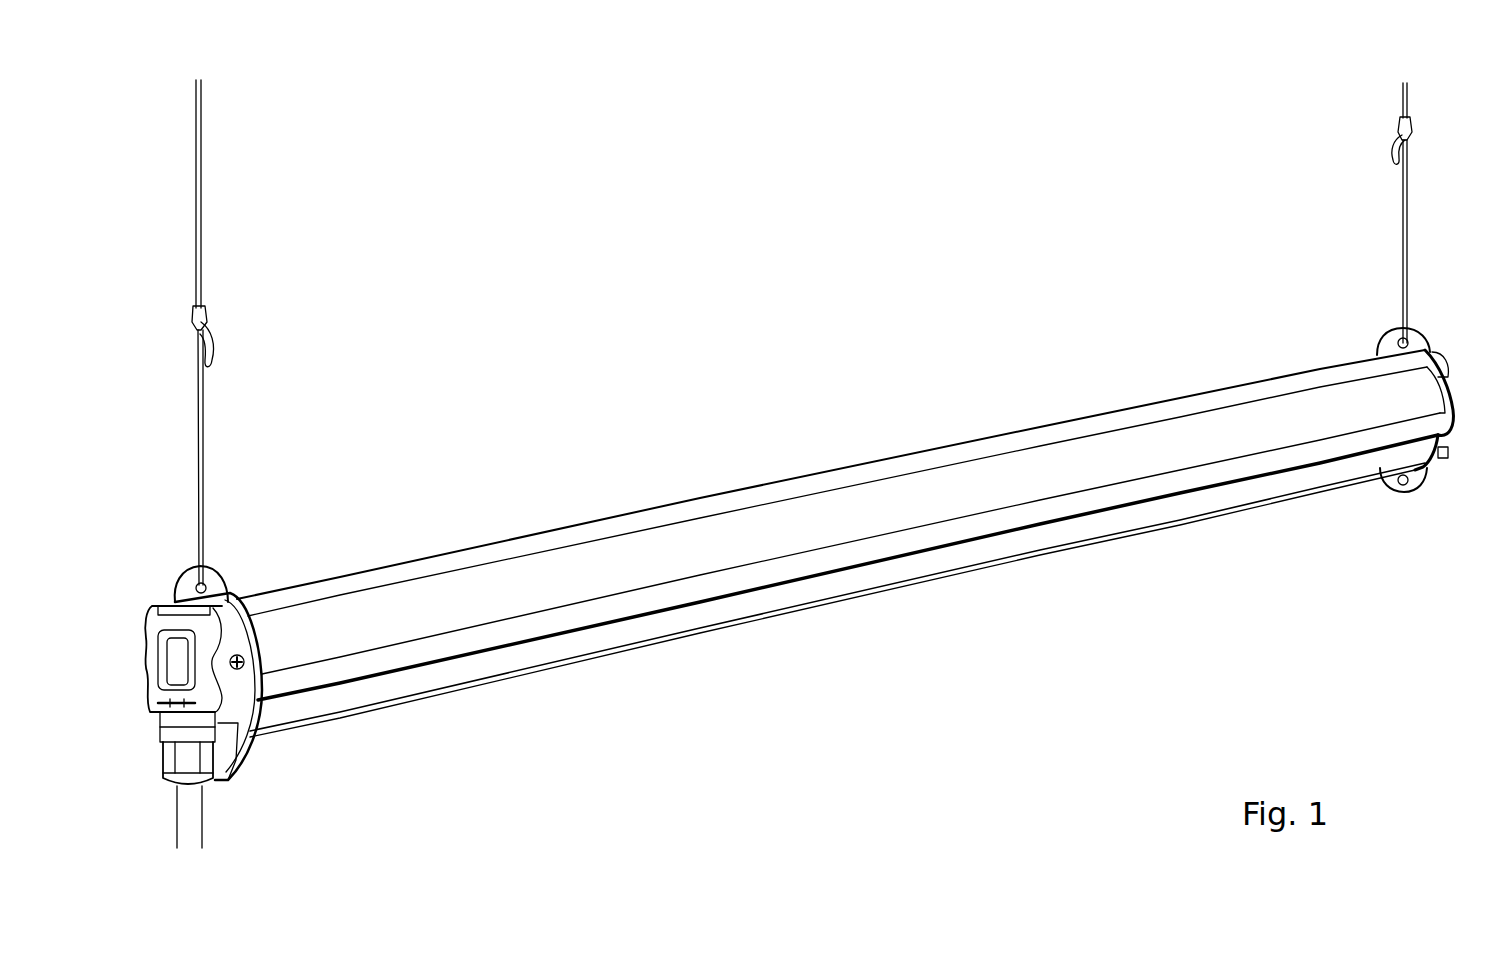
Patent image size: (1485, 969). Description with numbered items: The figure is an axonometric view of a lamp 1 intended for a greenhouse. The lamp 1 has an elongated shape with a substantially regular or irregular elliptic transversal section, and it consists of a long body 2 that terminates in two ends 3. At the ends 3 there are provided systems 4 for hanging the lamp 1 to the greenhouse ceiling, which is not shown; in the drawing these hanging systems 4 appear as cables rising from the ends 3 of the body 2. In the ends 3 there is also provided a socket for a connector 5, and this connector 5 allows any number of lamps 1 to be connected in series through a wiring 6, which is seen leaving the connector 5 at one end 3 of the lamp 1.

The lamp 1 is at (998, 422).
The body 2 is at (605, 530).
The ends 3 is at (216, 575).
The systems for hanging 4 is at (198, 445).
The connector 5 is at (160, 751).
The wiring 6 is at (190, 807).